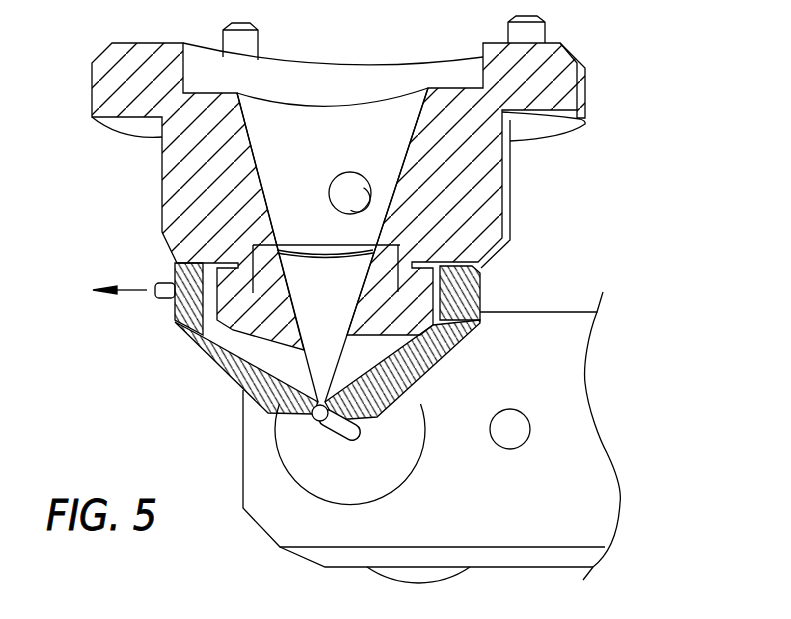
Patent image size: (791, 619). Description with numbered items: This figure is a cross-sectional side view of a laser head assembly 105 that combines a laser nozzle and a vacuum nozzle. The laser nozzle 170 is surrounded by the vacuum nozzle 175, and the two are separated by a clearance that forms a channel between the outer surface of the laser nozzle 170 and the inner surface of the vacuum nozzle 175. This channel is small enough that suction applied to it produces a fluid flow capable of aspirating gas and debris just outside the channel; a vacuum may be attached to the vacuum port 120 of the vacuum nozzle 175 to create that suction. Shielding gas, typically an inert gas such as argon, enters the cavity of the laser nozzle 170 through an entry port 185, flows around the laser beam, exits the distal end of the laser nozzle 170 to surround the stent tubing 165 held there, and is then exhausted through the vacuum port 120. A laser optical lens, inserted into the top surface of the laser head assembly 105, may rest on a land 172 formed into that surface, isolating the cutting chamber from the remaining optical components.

The laser head assembly 105 is at (578, 80).
The land 172 is at (318, 55).
The entry port 185 is at (360, 200).
The laser nozzle 170 is at (378, 287).
The vacuum nozzle 175 is at (203, 345).
The vacuum port 120 is at (160, 283).
The stent tubing 165 is at (268, 412).